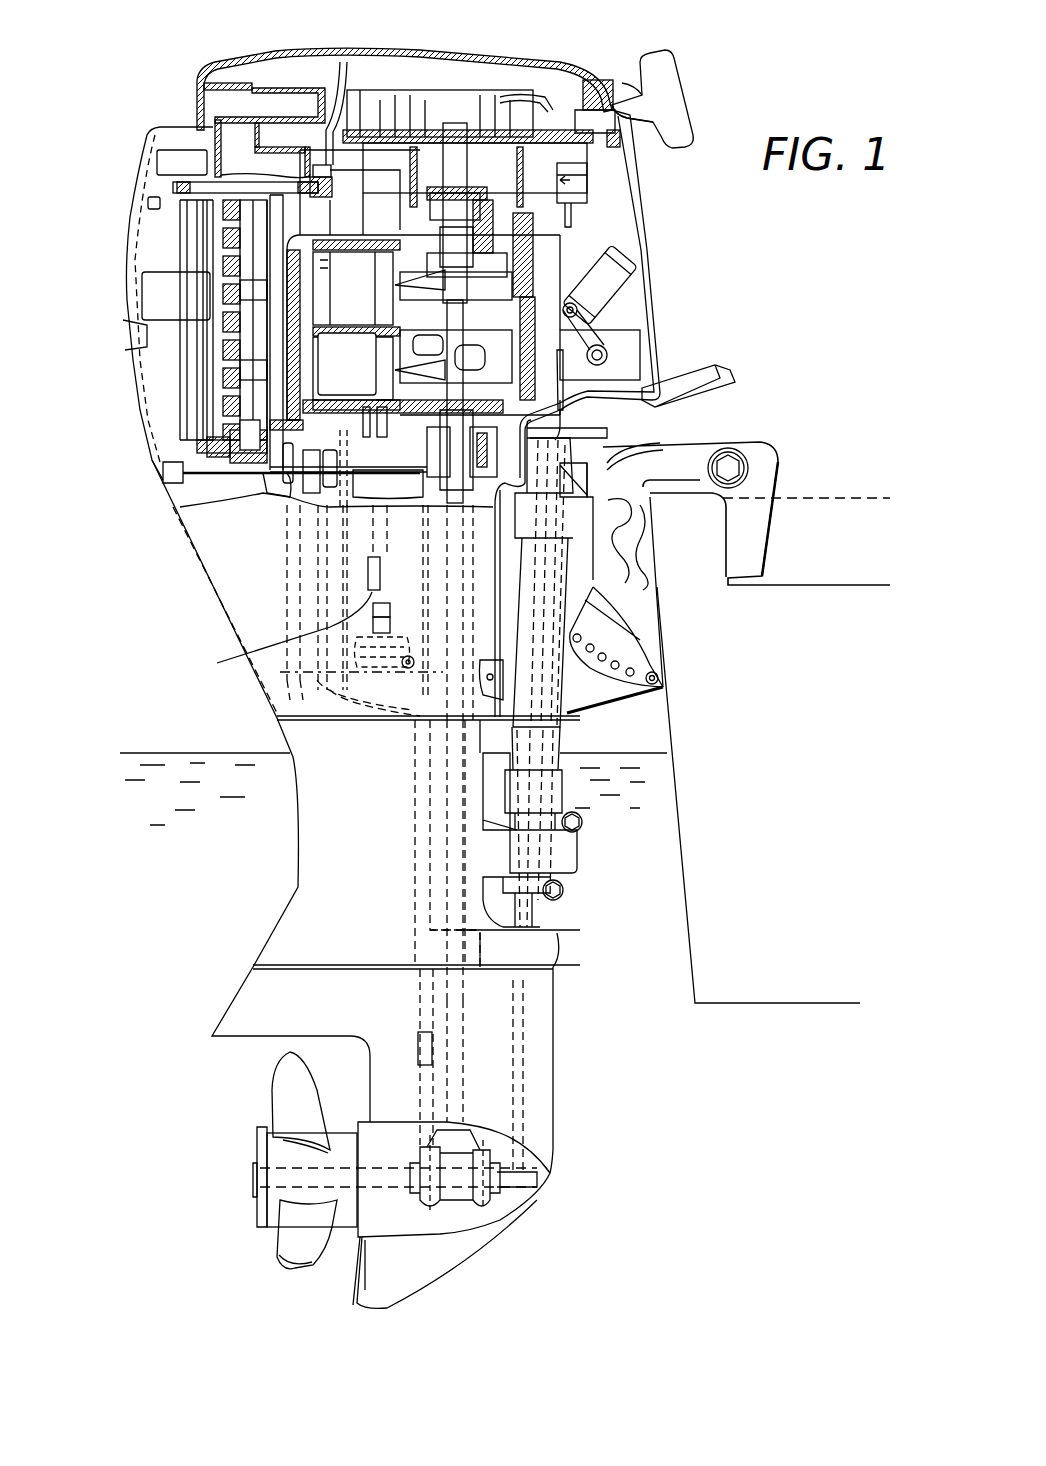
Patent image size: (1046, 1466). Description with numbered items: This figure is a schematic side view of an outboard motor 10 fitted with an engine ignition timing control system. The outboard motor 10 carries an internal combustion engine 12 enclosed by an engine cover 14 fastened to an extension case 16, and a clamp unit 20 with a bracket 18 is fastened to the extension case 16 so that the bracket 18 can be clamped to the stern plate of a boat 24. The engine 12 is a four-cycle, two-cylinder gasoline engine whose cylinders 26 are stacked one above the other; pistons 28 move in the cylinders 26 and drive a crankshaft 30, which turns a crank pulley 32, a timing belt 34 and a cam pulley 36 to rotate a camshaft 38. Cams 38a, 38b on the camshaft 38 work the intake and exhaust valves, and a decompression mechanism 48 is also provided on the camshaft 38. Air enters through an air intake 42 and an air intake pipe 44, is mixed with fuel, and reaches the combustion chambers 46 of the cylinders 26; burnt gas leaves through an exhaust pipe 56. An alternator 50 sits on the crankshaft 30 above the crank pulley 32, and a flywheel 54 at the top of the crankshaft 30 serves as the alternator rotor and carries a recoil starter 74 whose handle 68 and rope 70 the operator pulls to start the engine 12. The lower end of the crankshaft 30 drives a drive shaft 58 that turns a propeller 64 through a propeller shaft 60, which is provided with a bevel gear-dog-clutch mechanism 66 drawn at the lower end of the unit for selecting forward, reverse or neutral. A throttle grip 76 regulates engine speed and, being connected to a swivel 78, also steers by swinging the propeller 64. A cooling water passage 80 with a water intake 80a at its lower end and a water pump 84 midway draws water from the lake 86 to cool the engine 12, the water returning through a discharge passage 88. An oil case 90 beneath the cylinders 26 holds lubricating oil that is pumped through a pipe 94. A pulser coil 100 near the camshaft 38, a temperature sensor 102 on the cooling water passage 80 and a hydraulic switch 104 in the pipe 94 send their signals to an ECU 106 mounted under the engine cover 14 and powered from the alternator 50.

The outboard motor 10 is at (605, 58).
The internal combustion engine 12 is at (383, 60).
The engine cover 14 is at (286, 52).
The extension case 16 is at (215, 592).
The bracket 18 is at (650, 538).
The clamp unit 20 is at (790, 454).
The boat 24 is at (781, 790).
The cylinder 26 is at (287, 383).
The piston 28 is at (400, 357).
The crankshaft 30 is at (620, 258).
The crank pulley 32 is at (573, 217).
The timing belt 34 is at (340, 60).
The cam pulley 36 is at (190, 192).
The camshaft 38 is at (247, 348).
The cam 38a is at (240, 370).
The cam 38b is at (247, 293).
The air intake 42 is at (215, 100).
The air intake pipe 44 is at (152, 130).
The combustion chamber 46 is at (347, 365).
The decompression mechanism 48 is at (194, 313).
The alternator 50 is at (590, 180).
The flywheel 54 is at (517, 98).
The exhaust pipe 56 is at (303, 568).
The drive shaft 58 is at (455, 800).
The propeller shaft 60 is at (347, 1187).
The propeller 64 is at (287, 1090).
The bevel gear transmission 66 is at (429, 1137).
The handle 68 is at (673, 107).
The rope 70 is at (560, 108).
The recoil starter 74 is at (634, 82).
The throttle grip 76 is at (700, 388).
The swivel 78 is at (560, 733).
The cooling water passage 80 is at (425, 848).
The water intake 80a is at (418, 1048).
The water pump 84 is at (420, 945).
The lake 86 is at (211, 795).
The discharge passage 88 is at (330, 614).
The oil case 90 is at (570, 610).
The pipe 94 is at (377, 550).
The pulser coil 100 is at (148, 203).
The temperature sensor 102 is at (300, 500).
The hydraulic switch 104 is at (272, 637).
The ECU 106 is at (156, 164).